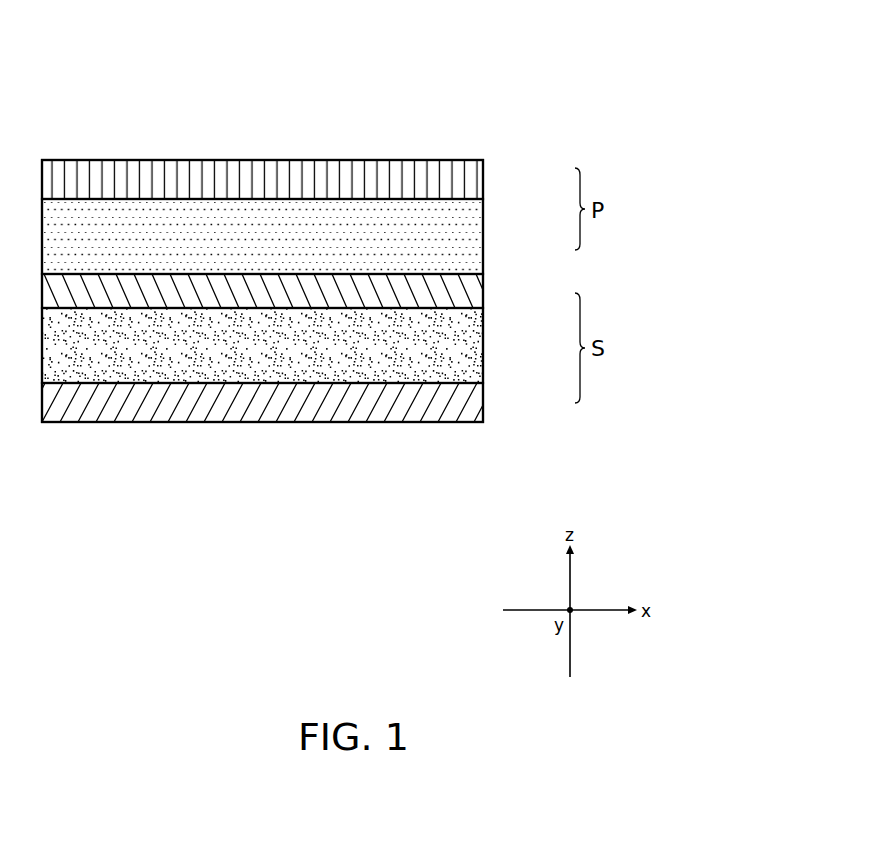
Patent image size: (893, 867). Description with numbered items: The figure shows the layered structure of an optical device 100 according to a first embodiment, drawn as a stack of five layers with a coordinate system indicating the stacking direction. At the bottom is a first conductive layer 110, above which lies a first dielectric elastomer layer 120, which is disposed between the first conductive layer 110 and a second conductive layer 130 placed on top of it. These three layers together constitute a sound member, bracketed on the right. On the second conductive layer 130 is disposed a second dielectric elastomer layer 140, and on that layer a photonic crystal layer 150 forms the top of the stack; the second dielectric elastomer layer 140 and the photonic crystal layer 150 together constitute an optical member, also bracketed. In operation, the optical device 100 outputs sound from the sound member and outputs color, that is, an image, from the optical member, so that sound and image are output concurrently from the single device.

The optical device 100 is at (429, 112).
The first conductive layer 110 is at (477, 402).
The first dielectric elastomer layer 120 is at (477, 348).
The second conductive layer 130 is at (477, 293).
The second dielectric elastomer layer 140 is at (477, 237).
The photonic crystal layer 150 is at (477, 181).